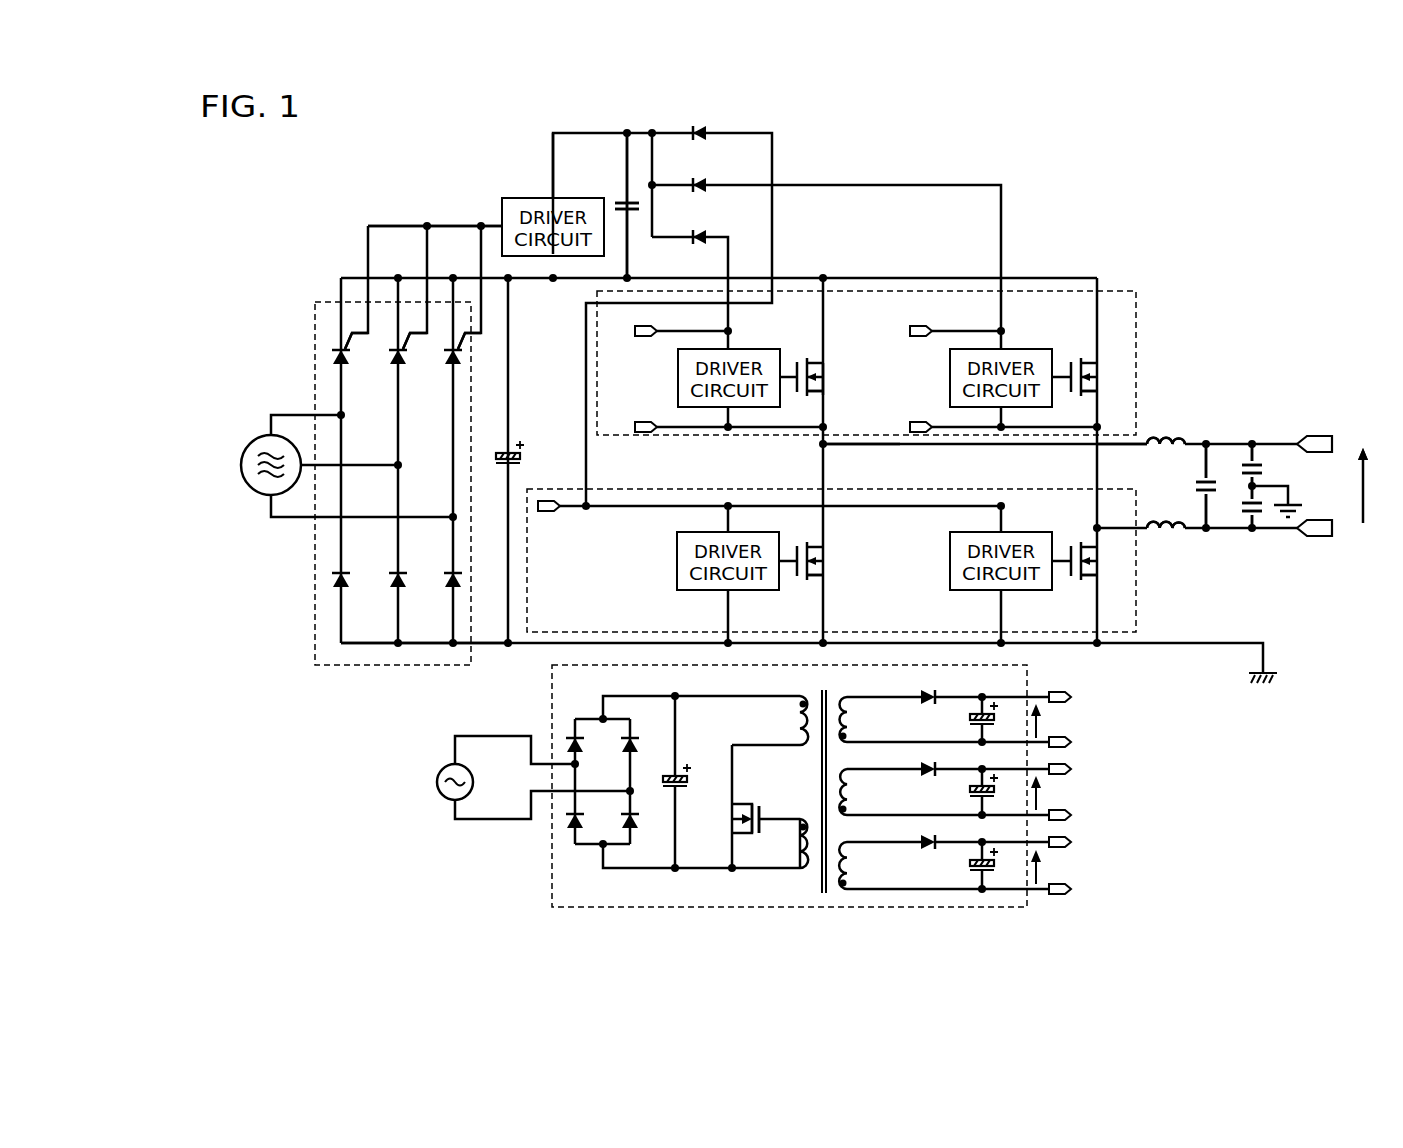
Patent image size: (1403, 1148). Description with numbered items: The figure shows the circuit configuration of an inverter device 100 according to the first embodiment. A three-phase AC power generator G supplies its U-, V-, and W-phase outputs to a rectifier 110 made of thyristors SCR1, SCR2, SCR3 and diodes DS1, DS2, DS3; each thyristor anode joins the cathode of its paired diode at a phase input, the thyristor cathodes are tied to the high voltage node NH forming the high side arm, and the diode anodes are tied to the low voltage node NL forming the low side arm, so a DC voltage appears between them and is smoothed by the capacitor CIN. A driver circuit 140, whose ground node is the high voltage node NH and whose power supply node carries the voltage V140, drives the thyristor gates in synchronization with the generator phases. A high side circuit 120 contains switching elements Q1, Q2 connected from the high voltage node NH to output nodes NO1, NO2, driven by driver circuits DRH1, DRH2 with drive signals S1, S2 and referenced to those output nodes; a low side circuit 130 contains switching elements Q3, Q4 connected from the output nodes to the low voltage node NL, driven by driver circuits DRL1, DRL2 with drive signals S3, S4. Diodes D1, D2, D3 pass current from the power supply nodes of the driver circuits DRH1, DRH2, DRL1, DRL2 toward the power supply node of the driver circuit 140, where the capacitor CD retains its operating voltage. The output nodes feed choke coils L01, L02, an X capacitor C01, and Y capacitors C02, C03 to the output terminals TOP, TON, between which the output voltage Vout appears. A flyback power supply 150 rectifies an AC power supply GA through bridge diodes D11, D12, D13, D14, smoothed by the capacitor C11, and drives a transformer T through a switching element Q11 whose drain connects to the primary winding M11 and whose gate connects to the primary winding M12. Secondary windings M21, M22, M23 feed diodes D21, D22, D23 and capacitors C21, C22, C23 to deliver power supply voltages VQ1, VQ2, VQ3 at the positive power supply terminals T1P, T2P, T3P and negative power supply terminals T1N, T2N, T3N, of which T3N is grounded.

The inverter device 100 is at (1231, 161).
The rectifier 110 is at (316, 304).
The high side circuit 120 is at (1136, 291).
The low side circuit 130 is at (1137, 614).
The driver circuit 140 is at (503, 198).
The power supply 150 is at (552, 874).
The voltage at the power supply node of the driver circuit V140 is at (545, 165).
The high voltage node NH is at (388, 270).
The low voltage node NL is at (396, 657).
The three-phase AC power generator G is at (250, 447).
The thyristor SCR1 is at (338, 362).
The thyristor SCR2 is at (395, 362).
The thyristor SCR3 is at (450, 362).
The diode DS1 is at (336, 568).
The diode DS2 is at (393, 568).
The diode DS3 is at (448, 568).
The capacitor CIN is at (524, 460).
The capacitor CD is at (618, 200).
The diode D1 is at (708, 232).
The diode D2 is at (708, 180).
The diode D3 is at (708, 128).
The positive power supply terminal T1P is at (634, 333).
The negative power supply terminal T1N is at (634, 426).
The positive power supply terminal T2P is at (909, 331).
The negative power supply terminal T2N is at (909, 426).
The positive power supply terminal T3P is at (548, 512).
The negative power supply terminal T3N is at (1072, 890).
The driver circuit DRH1 is at (760, 349).
The driver circuit DRH2 is at (1030, 349).
The driver circuit DRL1 is at (676, 548).
The driver circuit DRL2 is at (1033, 532).
The switching element Q1 is at (822, 373).
The switching element Q2 is at (1097, 375).
The switching element Q3 is at (826, 556).
The switching element Q4 is at (1098, 558).
The drive signal S1 is at (790, 385).
The drive signal S2 is at (1060, 388).
The drive signal S3 is at (790, 568).
The drive signal S4 is at (1064, 575).
The output node NO1 is at (808, 447).
The output node NO2 is at (1082, 460).
The inductor L01 is at (1162, 438).
The inductor L02 is at (1165, 532).
The capacitor C01 is at (1196, 484).
The capacitor C02 is at (1264, 462).
The capacitor C03 is at (1264, 512).
The output terminal TOP is at (1320, 436).
The output terminal TON is at (1320, 537).
The output voltage Vout is at (1340, 485).
The AC power supply GA is at (437, 778).
The diode D11 is at (572, 735).
The diode D12 is at (636, 736).
The diode D13 is at (572, 830).
The diode D14 is at (636, 830).
The capacitor C11 is at (682, 790).
The primary winding M11 is at (796, 722).
The primary winding M12 is at (796, 843).
The switching element Q11 is at (760, 805).
The transformer T is at (800, 884).
The secondary winding M21 is at (850, 722).
The secondary winding M22 is at (850, 792).
The secondary winding M23 is at (850, 864).
The diode D21 is at (924, 694).
The diode D22 is at (924, 766).
The diode D23 is at (924, 839).
The capacitor C21 is at (970, 720).
The capacitor C22 is at (970, 792).
The capacitor C23 is at (970, 864).
The power supply voltage VQ1 is at (1053, 721).
The power supply voltage VQ2 is at (1053, 793).
The power supply voltage VQ3 is at (1053, 867).